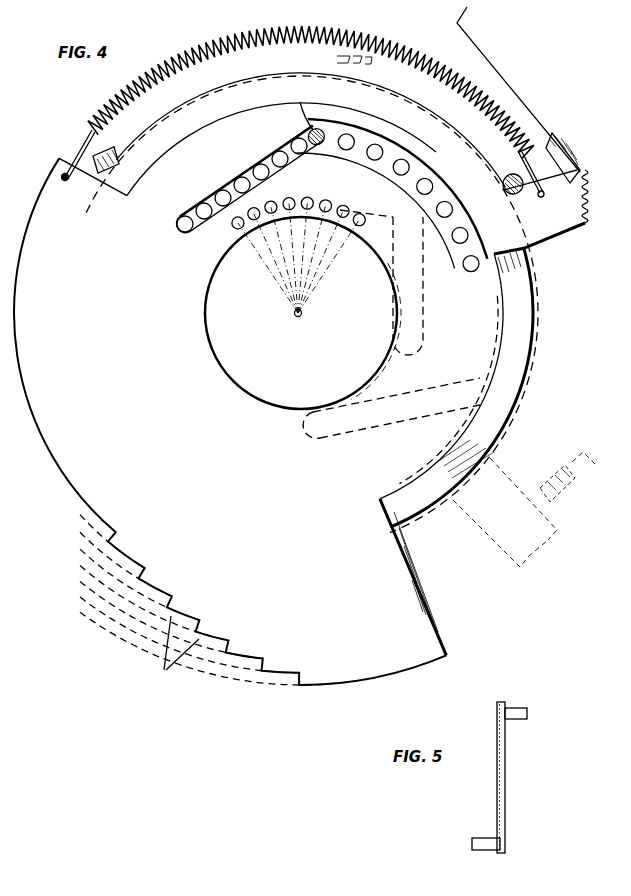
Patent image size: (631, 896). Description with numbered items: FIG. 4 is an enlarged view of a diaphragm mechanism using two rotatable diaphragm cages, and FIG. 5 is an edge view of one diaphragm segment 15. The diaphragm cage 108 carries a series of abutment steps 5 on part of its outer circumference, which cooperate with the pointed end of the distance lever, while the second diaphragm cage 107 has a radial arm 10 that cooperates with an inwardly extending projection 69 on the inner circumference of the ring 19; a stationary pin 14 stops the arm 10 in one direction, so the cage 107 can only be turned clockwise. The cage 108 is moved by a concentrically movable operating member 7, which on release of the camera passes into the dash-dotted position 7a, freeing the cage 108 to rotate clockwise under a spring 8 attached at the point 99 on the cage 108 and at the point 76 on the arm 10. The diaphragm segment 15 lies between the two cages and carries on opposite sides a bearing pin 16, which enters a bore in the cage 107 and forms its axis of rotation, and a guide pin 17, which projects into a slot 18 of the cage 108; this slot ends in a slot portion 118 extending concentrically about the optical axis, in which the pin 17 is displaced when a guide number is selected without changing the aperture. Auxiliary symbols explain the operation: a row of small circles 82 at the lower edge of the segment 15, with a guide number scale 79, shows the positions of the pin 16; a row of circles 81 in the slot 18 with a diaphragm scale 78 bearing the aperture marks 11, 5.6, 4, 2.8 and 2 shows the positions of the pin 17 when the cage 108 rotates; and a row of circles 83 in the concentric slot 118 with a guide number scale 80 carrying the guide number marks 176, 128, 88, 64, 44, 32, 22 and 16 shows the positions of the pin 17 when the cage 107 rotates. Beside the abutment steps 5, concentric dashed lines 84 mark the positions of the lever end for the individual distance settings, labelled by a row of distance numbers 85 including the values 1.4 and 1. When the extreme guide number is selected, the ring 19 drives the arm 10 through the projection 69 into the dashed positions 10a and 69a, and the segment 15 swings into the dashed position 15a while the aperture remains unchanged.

In FIG. 4, the spring 8 is at (196, 54).
In FIG. 4, the released position of operating member 7a is at (335, 57).
In FIG. 4, the diaphragm cage 108 is at (195, 143).
In FIG. 4, the diaphragm cage 107 is at (140, 150).
In FIG. 4, the operating member 7 is at (95, 150).
In FIG. 4, the attachment point 99 is at (67, 180).
In FIG. 4, the guide pin 17 is at (302, 107).
In FIG. 5, the guide pin 17 is at (512, 709).
In FIG. 4, the orifice 176 is at (283, 178).
In FIG. 4, the orifice 128 is at (315, 186).
In FIG. 4, the orifice 88 is at (336, 182).
In FIG. 4, the orifice 64 is at (360, 201).
In FIG. 4, the orifice 44 is at (377, 204).
In FIG. 4, the orifice 32 is at (391, 224).
In FIG. 4, the orifice 22 is at (180, 193).
In FIG. 4, the bearing pin 16 is at (198, 181).
In FIG. 5, the bearing pin 16 is at (485, 838).
In FIG. 4, the diaphragm segment 15 is at (377, 137).
In FIG. 5, the diaphragm segment 15 is at (503, 782).
In FIG. 4, the displaced position of diaphragm segment 15a is at (487, 333).
In FIG. 4, the guide number scale 80 is at (393, 142).
In FIG. 4, the row of small circles 83 is at (393, 163).
In FIG. 4, the row of small circles 82 is at (338, 206).
In FIG. 4, the concentric slot portion 118 is at (447, 230).
In FIG. 4, the slot 18 is at (293, 150).
In FIG. 4, the diaphragm scale 78 is at (242, 172).
In FIG. 4, the orifice 11 is at (222, 190).
In FIG. 4, the orifice 5.6 is at (259, 164).
In FIG. 4, the orifice 4 is at (268, 160).
In FIG. 4, the orifice 2.8 is at (282, 150).
In FIG. 4, the orifice 2 is at (298, 138).
In FIG. 4, the row of small circles 81 is at (181, 232).
In FIG. 4, the guide number scale 79 is at (258, 248).
In FIG. 4, the ring 19 is at (505, 60).
In FIG. 4, the projection 69 is at (556, 135).
In FIG. 4, the stationary pin 14 is at (506, 179).
In FIG. 4, the attachment point 76 is at (540, 197).
In FIG. 4, the radial arm 10 is at (563, 220).
In FIG. 4, the stop block alternate 69a is at (548, 483).
In FIG. 4, the body portion 10a is at (487, 517).
In FIG. 4, the row of numbers 85 is at (57, 548).
In FIG. 4, the scale 1.4 is at (64, 597).
In FIG. 4, the scale 1 is at (62, 612).
In FIG. 4, the series of abutment steps 5 is at (176, 652).
In FIG. 4, the concentric dashed lines 84 is at (220, 667).